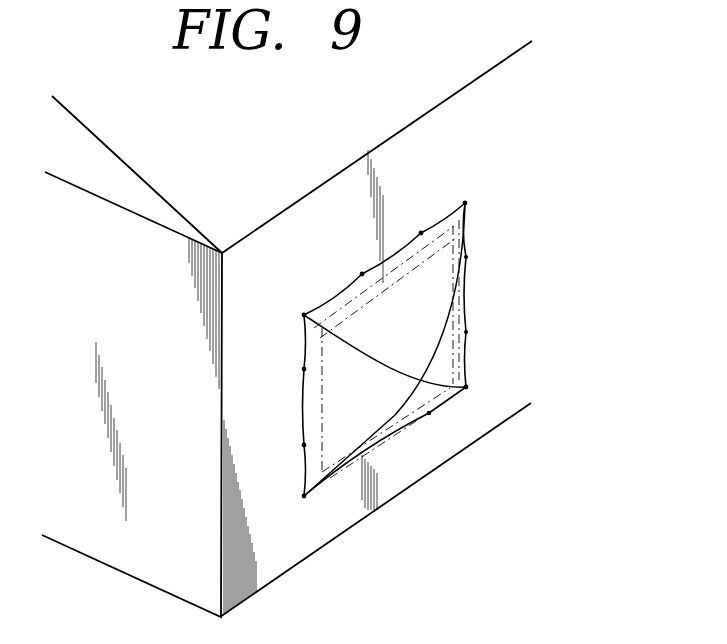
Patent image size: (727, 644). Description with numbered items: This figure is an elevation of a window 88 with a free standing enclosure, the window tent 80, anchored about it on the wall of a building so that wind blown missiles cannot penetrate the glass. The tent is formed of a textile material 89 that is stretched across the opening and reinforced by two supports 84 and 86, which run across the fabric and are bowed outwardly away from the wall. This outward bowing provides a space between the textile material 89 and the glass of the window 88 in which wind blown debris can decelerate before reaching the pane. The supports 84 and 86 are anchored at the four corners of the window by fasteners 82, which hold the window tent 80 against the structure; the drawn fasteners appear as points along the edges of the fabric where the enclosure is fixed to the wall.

The window tent 80 is at (384, 387).
The fasteners 82 is at (466, 203).
The support 84 is at (413, 392).
The support 86 is at (440, 385).
The window 88 is at (436, 370).
The textile material 89 is at (426, 297).